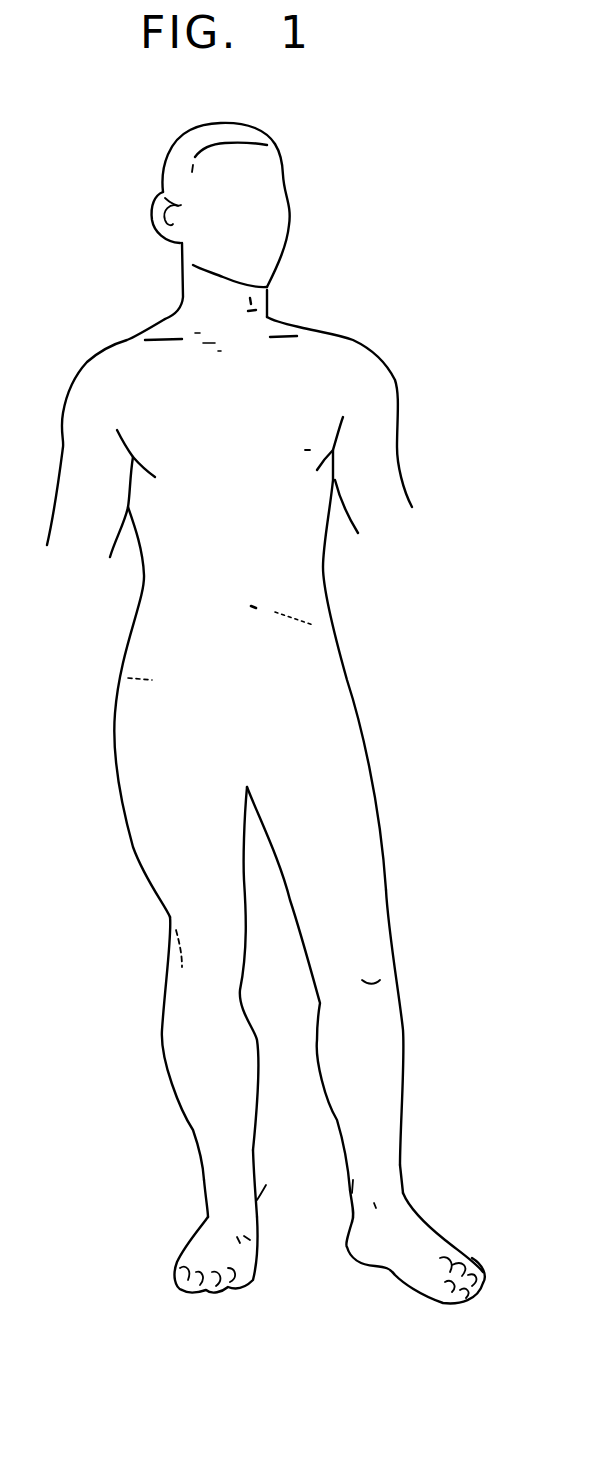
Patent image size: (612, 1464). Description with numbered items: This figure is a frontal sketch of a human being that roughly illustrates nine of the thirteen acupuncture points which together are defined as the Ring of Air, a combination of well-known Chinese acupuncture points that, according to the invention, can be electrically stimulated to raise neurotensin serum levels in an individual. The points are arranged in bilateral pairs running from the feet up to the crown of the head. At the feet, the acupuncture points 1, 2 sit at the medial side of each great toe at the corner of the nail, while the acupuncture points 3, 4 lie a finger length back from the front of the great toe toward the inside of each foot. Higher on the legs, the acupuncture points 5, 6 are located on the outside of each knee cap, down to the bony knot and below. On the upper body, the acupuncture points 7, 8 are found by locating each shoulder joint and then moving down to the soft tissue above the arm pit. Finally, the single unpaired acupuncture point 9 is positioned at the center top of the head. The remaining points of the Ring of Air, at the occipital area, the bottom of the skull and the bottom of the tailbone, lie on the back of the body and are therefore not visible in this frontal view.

The acupuncture point 1 is at (250, 1283).
The acupuncture point 2 is at (407, 1290).
The acupuncture point 3 is at (266, 1185).
The acupuncture point 4 is at (357, 1213).
The acupuncture point 5 is at (177, 1000).
The acupuncture point 6 is at (383, 993).
The acupuncture point 7 is at (127, 427).
The acupuncture point 8 is at (350, 408).
The acupuncture point 9 is at (240, 127).